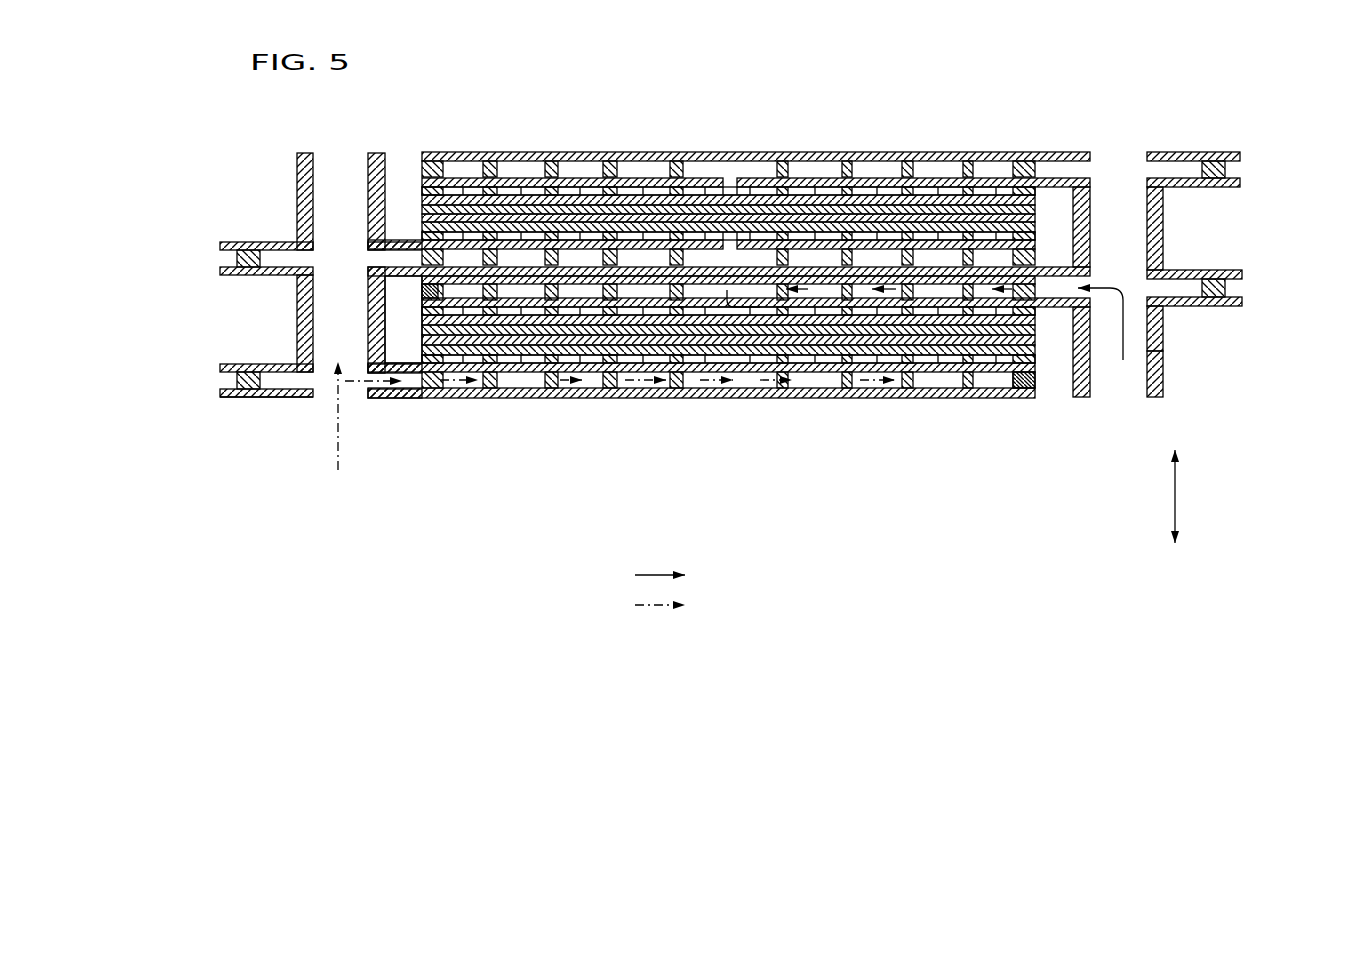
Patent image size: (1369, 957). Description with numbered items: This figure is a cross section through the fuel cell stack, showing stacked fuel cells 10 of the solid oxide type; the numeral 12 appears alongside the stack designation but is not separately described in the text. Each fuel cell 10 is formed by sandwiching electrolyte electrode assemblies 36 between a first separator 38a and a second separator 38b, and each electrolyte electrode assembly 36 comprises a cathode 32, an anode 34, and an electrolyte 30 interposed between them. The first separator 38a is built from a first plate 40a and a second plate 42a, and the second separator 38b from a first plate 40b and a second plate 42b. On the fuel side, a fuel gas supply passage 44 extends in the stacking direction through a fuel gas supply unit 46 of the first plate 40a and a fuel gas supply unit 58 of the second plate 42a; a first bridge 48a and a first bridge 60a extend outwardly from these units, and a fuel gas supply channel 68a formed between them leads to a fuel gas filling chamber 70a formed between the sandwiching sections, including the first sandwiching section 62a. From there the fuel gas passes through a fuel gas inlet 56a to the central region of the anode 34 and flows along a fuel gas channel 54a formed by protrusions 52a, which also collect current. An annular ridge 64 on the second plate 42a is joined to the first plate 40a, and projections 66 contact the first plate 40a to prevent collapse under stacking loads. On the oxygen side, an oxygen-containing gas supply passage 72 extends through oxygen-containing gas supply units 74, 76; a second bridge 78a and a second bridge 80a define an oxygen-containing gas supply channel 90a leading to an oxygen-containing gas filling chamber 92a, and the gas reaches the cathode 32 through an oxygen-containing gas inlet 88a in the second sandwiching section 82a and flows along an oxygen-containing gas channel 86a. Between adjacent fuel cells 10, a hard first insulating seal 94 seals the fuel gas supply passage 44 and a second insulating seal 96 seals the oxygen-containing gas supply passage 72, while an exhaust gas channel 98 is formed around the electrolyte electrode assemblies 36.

The fuel cell 10 is at (957, 70).
The fuel cell 12 is at (1000, 70).
The electrolyte 30 is at (549, 335).
The cathode 32 is at (521, 345).
The anode 34 is at (580, 352).
The electrolyte electrode assembly 36 is at (597, 440).
The first separator 38a is at (150, 225).
The second separator 38b is at (1310, 252).
The first plate 40a is at (217, 242).
The first plate 40b is at (1244, 299).
The second plate 42a is at (217, 267).
The second plate 42b is at (1244, 272).
The fuel gas supply passage 44 is at (330, 394).
The fuel gas supply unit 46 is at (284, 364).
The first bridge 48a is at (400, 240).
The protrusion 52a is at (660, 305).
The fuel gas channel 54a is at (640, 368).
The fuel gas inlet 56a is at (735, 300).
The fuel gas supply unit 58 is at (290, 398).
The first bridge 60a is at (403, 398).
The first sandwiching section 62a is at (1003, 399).
The annular ridge 64 is at (422, 291).
The projection 66 is at (549, 293).
The fuel gas supply channel 68a is at (375, 398).
The fuel gas filling chamber 70a is at (807, 388).
The oxygen-containing gas supply passage 72 is at (1108, 357).
The oxygen-containing gas supply unit 74 is at (1182, 306).
The oxygen-containing gas supply unit 76 is at (1183, 271).
The second bridge 78a is at (1057, 298).
The second bridge 80a is at (1057, 272).
The second sandwiching section 82a is at (945, 295).
The oxygen-containing gas channel 86a is at (880, 290).
The oxygen-containing gas inlet 88a is at (720, 297).
The oxygen-containing gas supply channel 90a is at (1055, 287).
The oxygen-containing gas filling chamber 92a is at (565, 290).
The first insulating seal 94 is at (377, 308).
The second insulating seal 96 is at (1155, 382).
The exhaust gas channel 98 is at (405, 320).